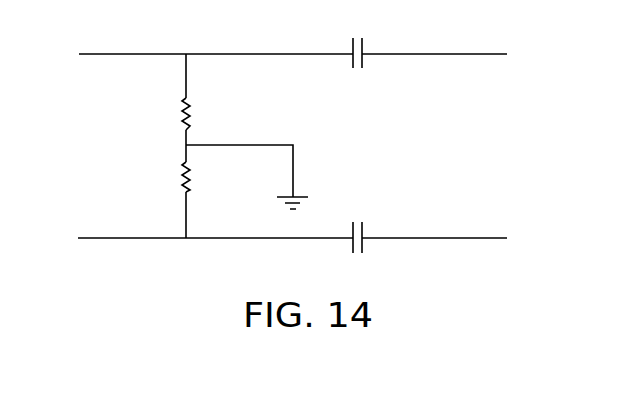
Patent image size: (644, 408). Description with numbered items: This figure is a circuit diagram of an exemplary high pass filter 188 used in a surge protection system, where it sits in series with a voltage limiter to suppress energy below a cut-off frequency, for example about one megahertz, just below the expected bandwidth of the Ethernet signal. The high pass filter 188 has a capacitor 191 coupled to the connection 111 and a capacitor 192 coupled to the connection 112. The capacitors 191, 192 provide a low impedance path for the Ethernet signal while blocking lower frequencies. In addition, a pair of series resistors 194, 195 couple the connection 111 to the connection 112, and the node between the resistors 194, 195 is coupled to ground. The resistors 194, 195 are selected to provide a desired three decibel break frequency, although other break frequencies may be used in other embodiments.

The connection 111 is at (445, 54).
The connection 112 is at (453, 238).
The high pass filter 188 is at (533, 96).
The capacitor 191 is at (361, 80).
The capacitor 192 is at (358, 211).
The resistor 194 is at (198, 115).
The resistor 195 is at (214, 168).